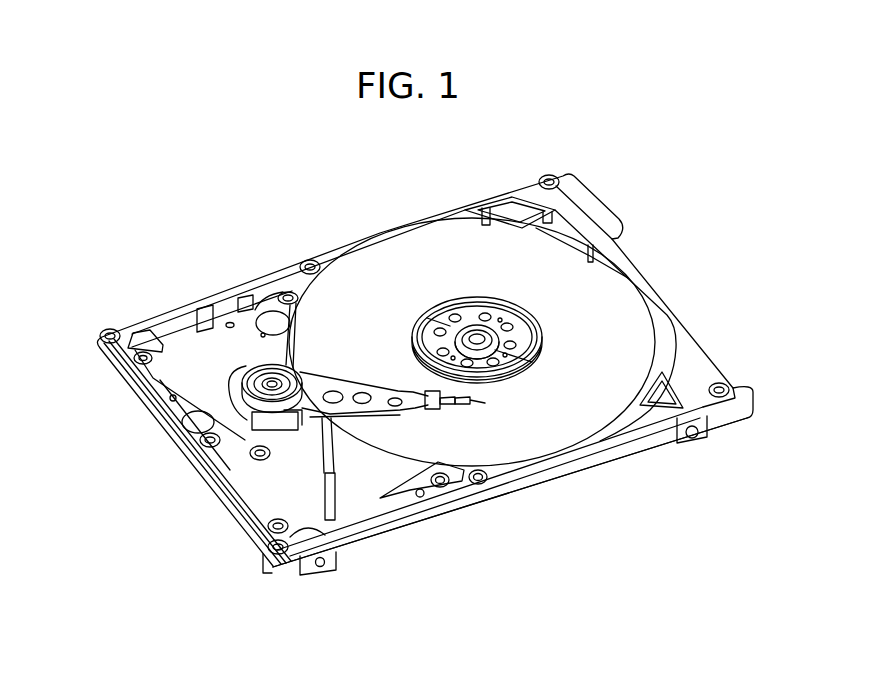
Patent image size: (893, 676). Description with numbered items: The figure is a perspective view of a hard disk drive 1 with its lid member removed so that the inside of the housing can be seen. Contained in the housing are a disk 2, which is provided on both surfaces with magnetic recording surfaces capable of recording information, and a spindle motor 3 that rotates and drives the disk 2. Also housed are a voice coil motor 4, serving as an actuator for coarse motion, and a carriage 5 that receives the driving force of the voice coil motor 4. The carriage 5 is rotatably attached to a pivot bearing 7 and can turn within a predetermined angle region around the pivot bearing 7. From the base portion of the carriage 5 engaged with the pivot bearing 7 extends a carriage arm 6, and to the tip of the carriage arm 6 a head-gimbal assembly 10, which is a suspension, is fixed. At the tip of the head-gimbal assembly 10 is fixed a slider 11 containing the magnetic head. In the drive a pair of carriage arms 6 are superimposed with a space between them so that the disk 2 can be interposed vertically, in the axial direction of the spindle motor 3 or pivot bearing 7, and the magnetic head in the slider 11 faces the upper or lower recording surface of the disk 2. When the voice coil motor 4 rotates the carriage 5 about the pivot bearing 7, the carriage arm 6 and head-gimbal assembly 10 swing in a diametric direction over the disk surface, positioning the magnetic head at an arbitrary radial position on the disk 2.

The hard disk drive 1 is at (268, 278).
The disk 2 is at (415, 293).
The spindle motor 3 is at (472, 313).
The voice coil motor 4 is at (190, 370).
The carriage 5 is at (317, 400).
The carriage arm 6 is at (344, 406).
The pivot bearing 7 is at (270, 382).
The head-gimbal assembly 10 is at (433, 402).
The slider 11 is at (483, 402).